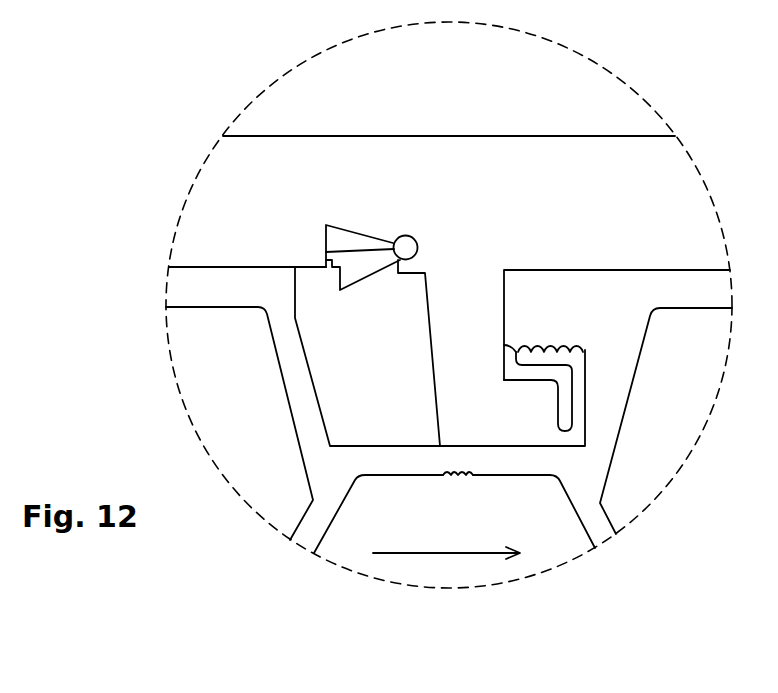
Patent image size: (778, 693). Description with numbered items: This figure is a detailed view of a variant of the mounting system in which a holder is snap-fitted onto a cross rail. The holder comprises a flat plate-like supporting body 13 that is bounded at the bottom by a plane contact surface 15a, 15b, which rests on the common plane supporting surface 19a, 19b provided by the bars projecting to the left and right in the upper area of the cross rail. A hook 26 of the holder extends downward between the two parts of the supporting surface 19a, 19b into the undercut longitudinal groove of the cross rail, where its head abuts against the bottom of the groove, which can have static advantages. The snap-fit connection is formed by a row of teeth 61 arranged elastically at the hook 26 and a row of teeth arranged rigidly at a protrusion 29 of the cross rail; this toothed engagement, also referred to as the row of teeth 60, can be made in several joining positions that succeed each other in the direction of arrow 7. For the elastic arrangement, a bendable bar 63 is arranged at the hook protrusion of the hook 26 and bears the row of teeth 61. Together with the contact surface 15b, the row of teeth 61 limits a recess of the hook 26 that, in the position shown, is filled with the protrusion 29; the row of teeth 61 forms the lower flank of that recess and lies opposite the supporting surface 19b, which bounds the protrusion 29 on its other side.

The supporting body 13 is at (443, 155).
The supporting surface 19a is at (255, 265).
The supporting surface 19b is at (643, 268).
The contact surface 15a is at (203, 272).
The contact surface 15b is at (694, 274).
The hook 26 is at (450, 345).
The protrusion 29 is at (553, 320).
The row of teeth 60 is at (568, 348).
The row of teeth 61 is at (547, 352).
The bendable bar 63 is at (582, 406).
The arrow 7 is at (441, 551).